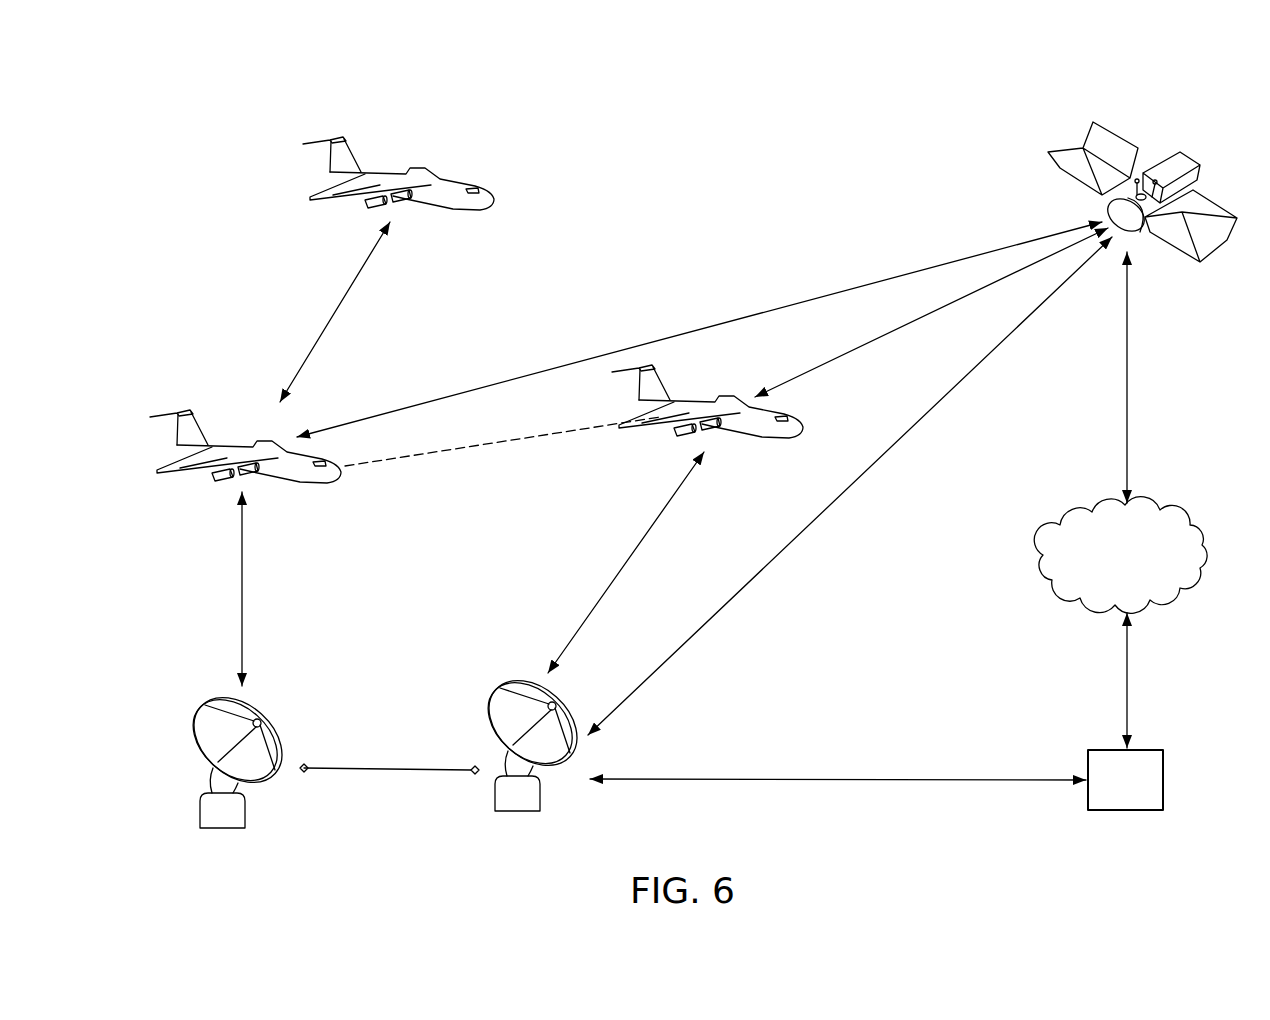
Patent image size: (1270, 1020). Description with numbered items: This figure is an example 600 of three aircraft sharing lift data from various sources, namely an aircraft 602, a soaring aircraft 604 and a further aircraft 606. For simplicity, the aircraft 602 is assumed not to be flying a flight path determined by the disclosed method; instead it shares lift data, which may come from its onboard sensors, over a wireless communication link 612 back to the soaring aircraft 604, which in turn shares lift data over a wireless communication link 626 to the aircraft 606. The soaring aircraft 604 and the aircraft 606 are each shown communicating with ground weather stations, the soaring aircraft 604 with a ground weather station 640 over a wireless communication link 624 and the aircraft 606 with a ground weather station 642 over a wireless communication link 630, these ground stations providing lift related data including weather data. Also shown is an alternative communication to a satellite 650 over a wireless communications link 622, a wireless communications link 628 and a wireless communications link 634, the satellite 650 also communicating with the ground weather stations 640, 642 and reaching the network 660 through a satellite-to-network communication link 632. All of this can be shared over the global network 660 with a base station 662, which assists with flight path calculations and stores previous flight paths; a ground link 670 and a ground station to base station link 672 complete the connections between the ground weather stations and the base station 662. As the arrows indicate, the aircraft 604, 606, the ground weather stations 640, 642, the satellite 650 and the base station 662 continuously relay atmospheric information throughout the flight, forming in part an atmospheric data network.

The example 600 is at (244, 148).
The aircraft 602 is at (460, 182).
The soaring aircraft 604 is at (178, 412).
The aircraft 606 is at (723, 402).
The wireless communication link 612 is at (343, 300).
The wireless communications link 622 is at (568, 363).
The wireless communication link 624 is at (243, 608).
The wireless communication link 626 is at (525, 438).
The wireless communications link 628 is at (898, 330).
The wireless communication link 630 is at (614, 580).
The satellite-to-network communication link 632 is at (1128, 385).
The wireless communications link 634 is at (825, 512).
The ground weather station 640 is at (246, 813).
The ground weather station 642 is at (541, 797).
The satellite 650 is at (1192, 158).
The network 660 is at (1168, 503).
The base station 662 is at (1157, 750).
The ground link 670 is at (403, 768).
The ground station to base station link 672 is at (1015, 779).